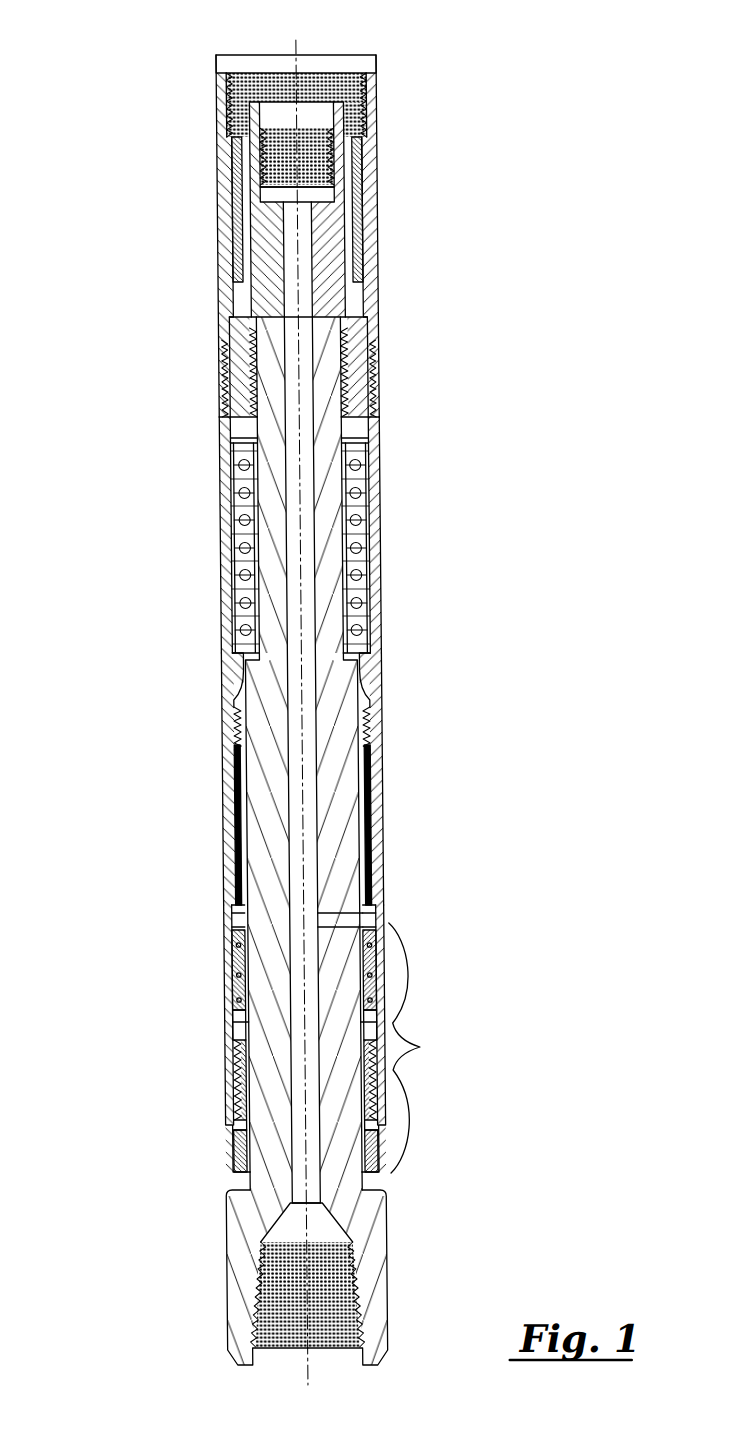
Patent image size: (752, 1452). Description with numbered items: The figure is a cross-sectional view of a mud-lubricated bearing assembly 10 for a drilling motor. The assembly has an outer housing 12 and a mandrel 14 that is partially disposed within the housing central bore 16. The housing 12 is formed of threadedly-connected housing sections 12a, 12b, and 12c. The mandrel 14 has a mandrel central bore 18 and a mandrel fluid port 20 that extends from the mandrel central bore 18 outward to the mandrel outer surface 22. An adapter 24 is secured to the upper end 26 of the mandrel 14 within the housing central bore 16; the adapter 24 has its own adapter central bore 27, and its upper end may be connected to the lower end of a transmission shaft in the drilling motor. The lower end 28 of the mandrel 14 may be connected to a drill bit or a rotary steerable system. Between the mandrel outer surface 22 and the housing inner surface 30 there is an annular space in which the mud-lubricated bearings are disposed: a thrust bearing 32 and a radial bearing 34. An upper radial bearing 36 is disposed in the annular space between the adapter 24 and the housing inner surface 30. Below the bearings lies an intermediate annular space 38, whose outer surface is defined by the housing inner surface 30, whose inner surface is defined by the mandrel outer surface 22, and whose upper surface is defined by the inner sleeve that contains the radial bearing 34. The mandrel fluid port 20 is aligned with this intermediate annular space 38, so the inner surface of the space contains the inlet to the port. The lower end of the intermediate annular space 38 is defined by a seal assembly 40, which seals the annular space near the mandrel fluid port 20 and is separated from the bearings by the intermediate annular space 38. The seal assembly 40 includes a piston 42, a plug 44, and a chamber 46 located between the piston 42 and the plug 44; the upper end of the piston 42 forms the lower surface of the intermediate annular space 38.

The mud-lubricated bearing assembly 10 is at (126, 444).
The housing 12 is at (380, 391).
The housing section 12a is at (221, 296).
The housing section 12b is at (371, 680).
The housing section 12c is at (217, 908).
The mandrel 14 is at (253, 1097).
The housing central bore 16 is at (342, 74).
The mandrel central bore 18 is at (301, 538).
The mandrel fluid port 20 is at (330, 917).
The mandrel outer surface 22 is at (223, 1030).
The adapter 24 is at (324, 237).
The upper end 26 is at (328, 325).
The adapter central bore 27 is at (287, 193).
The lower end 28 is at (221, 1312).
The housing inner surface 30 is at (352, 157).
The thrust bearing 32 is at (231, 540).
The radial bearing 34 is at (226, 857).
The upper radial bearing 36 is at (233, 220).
The intermediate annular space 38 is at (372, 920).
The seal assembly 40 is at (422, 1045).
The piston 42 is at (222, 963).
The plug 44 is at (225, 1138).
The chamber 46 is at (228, 1035).